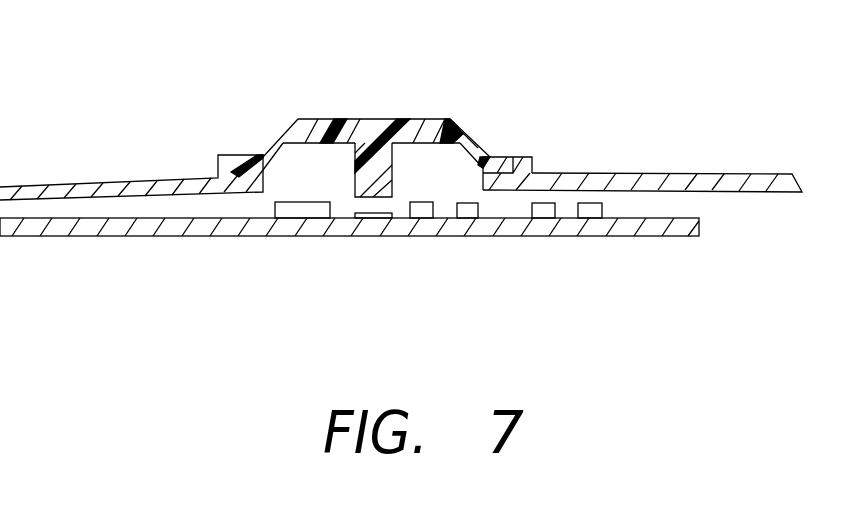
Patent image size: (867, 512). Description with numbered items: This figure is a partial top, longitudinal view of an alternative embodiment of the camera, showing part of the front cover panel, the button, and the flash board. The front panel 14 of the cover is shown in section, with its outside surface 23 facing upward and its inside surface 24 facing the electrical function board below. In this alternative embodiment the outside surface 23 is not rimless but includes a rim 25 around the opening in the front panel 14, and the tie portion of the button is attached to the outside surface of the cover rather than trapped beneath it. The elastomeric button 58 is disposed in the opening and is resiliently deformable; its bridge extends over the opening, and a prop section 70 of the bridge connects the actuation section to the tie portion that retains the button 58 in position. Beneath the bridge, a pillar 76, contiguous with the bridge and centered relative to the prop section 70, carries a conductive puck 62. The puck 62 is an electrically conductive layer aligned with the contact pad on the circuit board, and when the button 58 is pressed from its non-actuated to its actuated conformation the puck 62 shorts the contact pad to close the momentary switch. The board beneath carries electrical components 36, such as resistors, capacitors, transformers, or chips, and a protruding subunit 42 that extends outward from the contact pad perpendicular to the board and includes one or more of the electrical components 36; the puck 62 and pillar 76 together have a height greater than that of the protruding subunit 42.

The front panel 14 is at (755, 174).
The outside surface 23 is at (73, 183).
The inside surface 24 is at (722, 193).
The rim 25 is at (537, 164).
The electrical components 36 is at (465, 218).
The protruding subunit 42 is at (366, 297).
The elastomeric button 58 is at (373, 119).
The conductive puck 62 is at (405, 197).
The prop section 70 is at (477, 140).
The pillar 76 is at (357, 187).